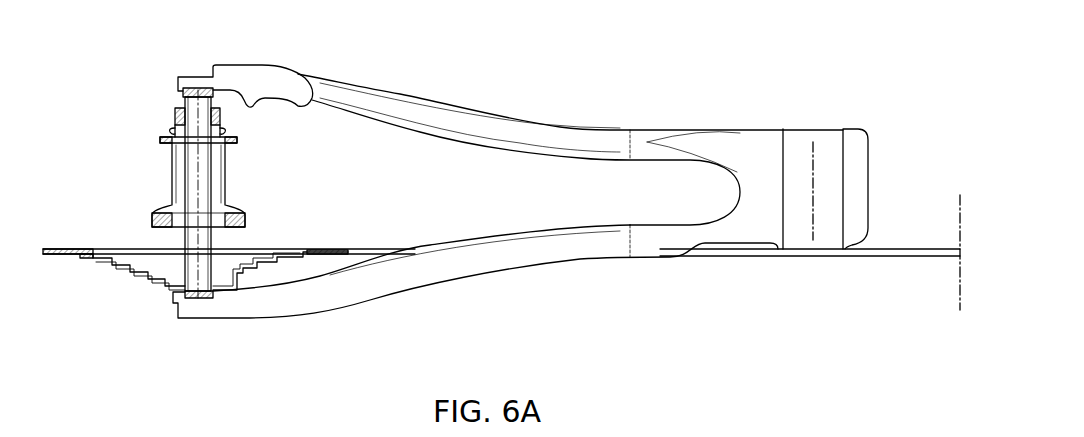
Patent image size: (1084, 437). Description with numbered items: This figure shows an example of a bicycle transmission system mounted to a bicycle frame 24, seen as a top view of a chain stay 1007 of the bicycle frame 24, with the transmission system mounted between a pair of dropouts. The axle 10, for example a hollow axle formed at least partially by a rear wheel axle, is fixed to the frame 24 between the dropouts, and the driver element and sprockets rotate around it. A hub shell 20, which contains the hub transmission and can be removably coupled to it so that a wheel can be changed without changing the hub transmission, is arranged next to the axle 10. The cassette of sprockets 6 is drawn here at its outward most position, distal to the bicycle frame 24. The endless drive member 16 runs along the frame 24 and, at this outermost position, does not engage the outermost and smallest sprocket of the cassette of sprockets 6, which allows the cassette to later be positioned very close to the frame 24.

The cassette of sprockets 6 is at (139, 285).
The axle 10 is at (175, 97).
The endless drive member 16 is at (746, 272).
The hub shell 20 is at (155, 183).
The bicycle frame 24 is at (427, 92).
The chain stay 1007 is at (510, 122).